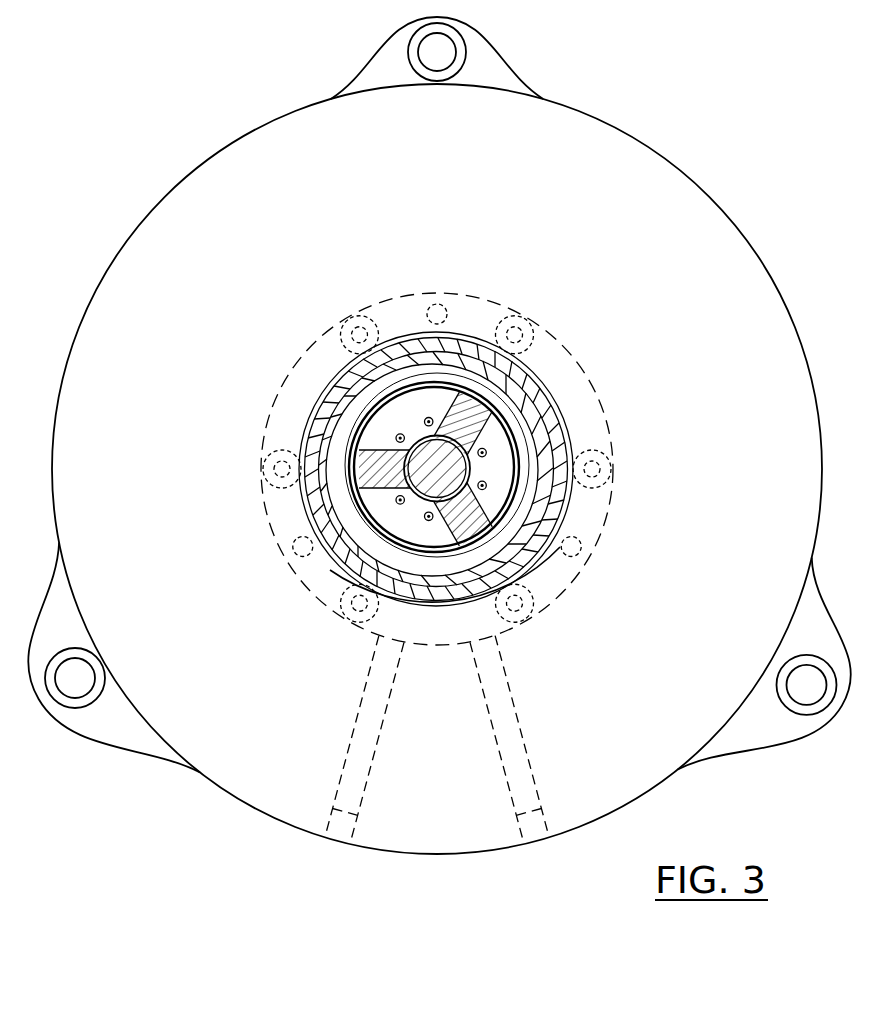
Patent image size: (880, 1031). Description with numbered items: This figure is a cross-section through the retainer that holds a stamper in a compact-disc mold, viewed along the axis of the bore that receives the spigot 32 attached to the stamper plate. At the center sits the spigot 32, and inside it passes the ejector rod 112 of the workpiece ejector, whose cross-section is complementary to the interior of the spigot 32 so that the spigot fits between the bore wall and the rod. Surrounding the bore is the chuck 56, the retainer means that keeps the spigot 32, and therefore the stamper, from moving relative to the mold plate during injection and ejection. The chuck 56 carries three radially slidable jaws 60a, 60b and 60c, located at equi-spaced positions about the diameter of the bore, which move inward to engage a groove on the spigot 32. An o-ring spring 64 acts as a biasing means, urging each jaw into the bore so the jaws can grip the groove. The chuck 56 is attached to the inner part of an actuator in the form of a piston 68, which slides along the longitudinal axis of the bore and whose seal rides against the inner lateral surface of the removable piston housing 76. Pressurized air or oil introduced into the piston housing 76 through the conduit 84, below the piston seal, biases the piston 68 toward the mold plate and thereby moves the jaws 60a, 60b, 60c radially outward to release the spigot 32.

The spigot 32 is at (417, 433).
The chuck 56 is at (588, 532).
The radially slidable jaw 60a is at (470, 513).
The radially slidable jaw 60b is at (363, 450).
The radially slidable jaw 60c is at (470, 413).
The o-ring spring 64 is at (412, 392).
The piston 68 is at (535, 465).
The piston housing 76 is at (547, 408).
The conduit 84 is at (372, 782).
The ejector rod 112 is at (390, 523).